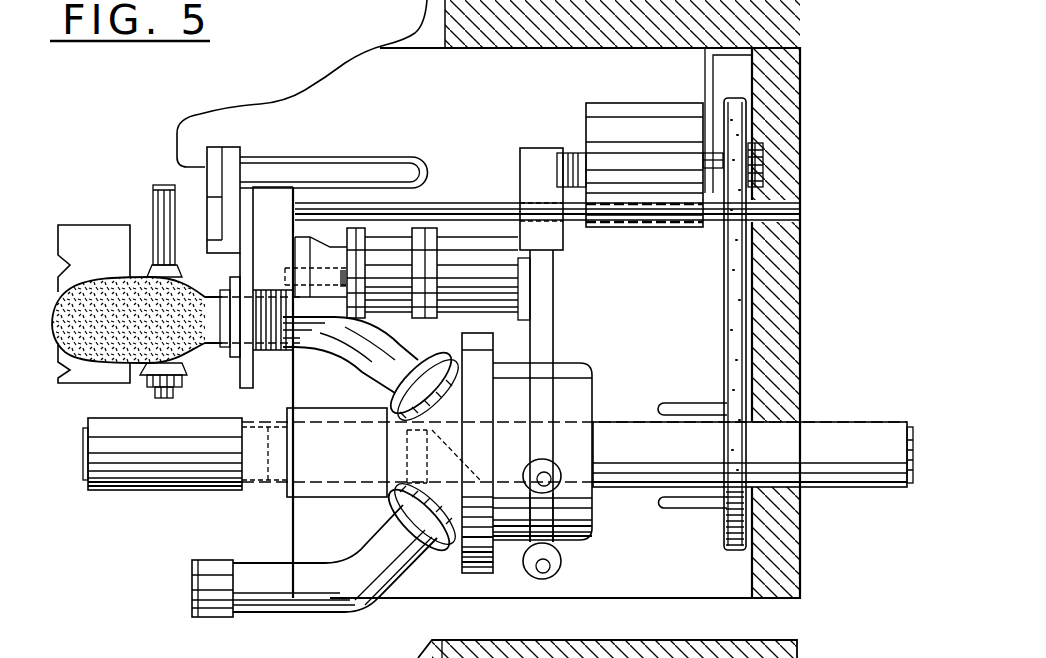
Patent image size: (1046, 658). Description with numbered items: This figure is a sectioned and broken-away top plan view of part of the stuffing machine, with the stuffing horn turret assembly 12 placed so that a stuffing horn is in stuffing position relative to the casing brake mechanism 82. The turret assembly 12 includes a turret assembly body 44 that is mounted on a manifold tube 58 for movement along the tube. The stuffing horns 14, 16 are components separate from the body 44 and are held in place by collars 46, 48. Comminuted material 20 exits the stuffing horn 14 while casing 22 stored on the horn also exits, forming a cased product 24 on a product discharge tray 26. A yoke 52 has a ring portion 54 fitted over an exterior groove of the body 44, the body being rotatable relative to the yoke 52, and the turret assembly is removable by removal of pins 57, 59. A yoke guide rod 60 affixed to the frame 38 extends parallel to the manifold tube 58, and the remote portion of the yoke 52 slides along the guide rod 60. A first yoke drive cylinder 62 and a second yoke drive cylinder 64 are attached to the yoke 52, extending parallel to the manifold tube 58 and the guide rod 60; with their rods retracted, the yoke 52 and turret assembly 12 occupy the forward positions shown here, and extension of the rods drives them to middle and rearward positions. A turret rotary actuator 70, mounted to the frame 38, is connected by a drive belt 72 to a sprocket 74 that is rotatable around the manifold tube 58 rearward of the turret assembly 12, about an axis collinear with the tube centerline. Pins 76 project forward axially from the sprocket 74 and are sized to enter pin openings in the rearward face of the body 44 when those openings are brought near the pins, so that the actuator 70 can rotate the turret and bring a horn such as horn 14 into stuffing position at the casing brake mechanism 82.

The stuffing horn turret assembly 12 is at (470, 574).
The stuffing horn 14 is at (363, 335).
The stuffing horn 16 is at (350, 568).
The comminuted material 20 is at (113, 306).
The casing 22 is at (280, 298).
The cased product 24 is at (48, 347).
The product discharge tray 26 is at (115, 242).
The frame 38 is at (775, 124).
The turret assembly body 44 is at (590, 503).
The collar 46 is at (435, 372).
The collar 48 is at (438, 547).
The yoke 52 is at (543, 312).
The ring portion 54 is at (543, 523).
The pin 57 is at (565, 468).
The manifold tube 58 is at (842, 450).
The pin 59 is at (543, 579).
The yoke guide rod 60 is at (443, 208).
The first yoke drive cylinder 62 is at (387, 260).
The second yoke drive cylinder 64 is at (463, 260).
The turret rotary actuator 70 is at (630, 133).
The drive belt 72 is at (735, 312).
The sprocket 74 is at (745, 515).
The pins 76 is at (669, 409).
The casing brake mechanism 82 is at (228, 292).